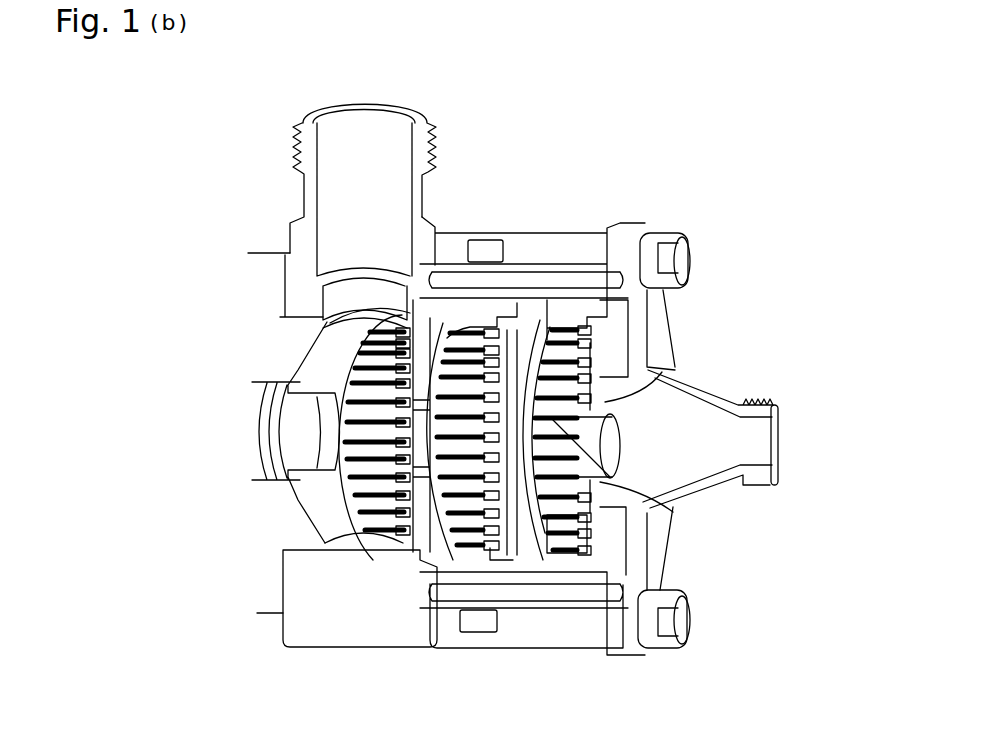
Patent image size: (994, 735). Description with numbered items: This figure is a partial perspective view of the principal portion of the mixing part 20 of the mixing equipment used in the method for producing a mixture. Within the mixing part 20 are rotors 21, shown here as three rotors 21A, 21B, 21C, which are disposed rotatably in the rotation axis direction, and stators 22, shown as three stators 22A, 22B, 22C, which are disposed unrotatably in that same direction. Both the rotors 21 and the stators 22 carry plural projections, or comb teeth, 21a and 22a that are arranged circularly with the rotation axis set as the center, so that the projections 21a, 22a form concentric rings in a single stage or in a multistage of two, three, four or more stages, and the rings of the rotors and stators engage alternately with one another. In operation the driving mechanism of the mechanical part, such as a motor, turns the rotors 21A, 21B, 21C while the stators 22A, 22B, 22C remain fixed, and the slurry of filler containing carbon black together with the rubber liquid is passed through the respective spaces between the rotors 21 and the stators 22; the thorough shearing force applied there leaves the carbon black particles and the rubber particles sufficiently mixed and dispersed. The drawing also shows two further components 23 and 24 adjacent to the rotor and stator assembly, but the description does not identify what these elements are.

The mixing part 20 is at (600, 209).
The rotors 21 is at (600, 342).
The projections (comb teeth) 21a is at (575, 397).
The rotor 21A is at (588, 565).
The rotor 21B is at (502, 400).
The rotor 21C is at (405, 532).
The stators 22 is at (546, 335).
The projections (comb teeth) 22a is at (673, 512).
The stator 22A is at (542, 523).
The stator 22B is at (461, 528).
The stator 22C is at (353, 505).
The output pipe 23 is at (760, 440).
The cylinder 24 is at (368, 130).